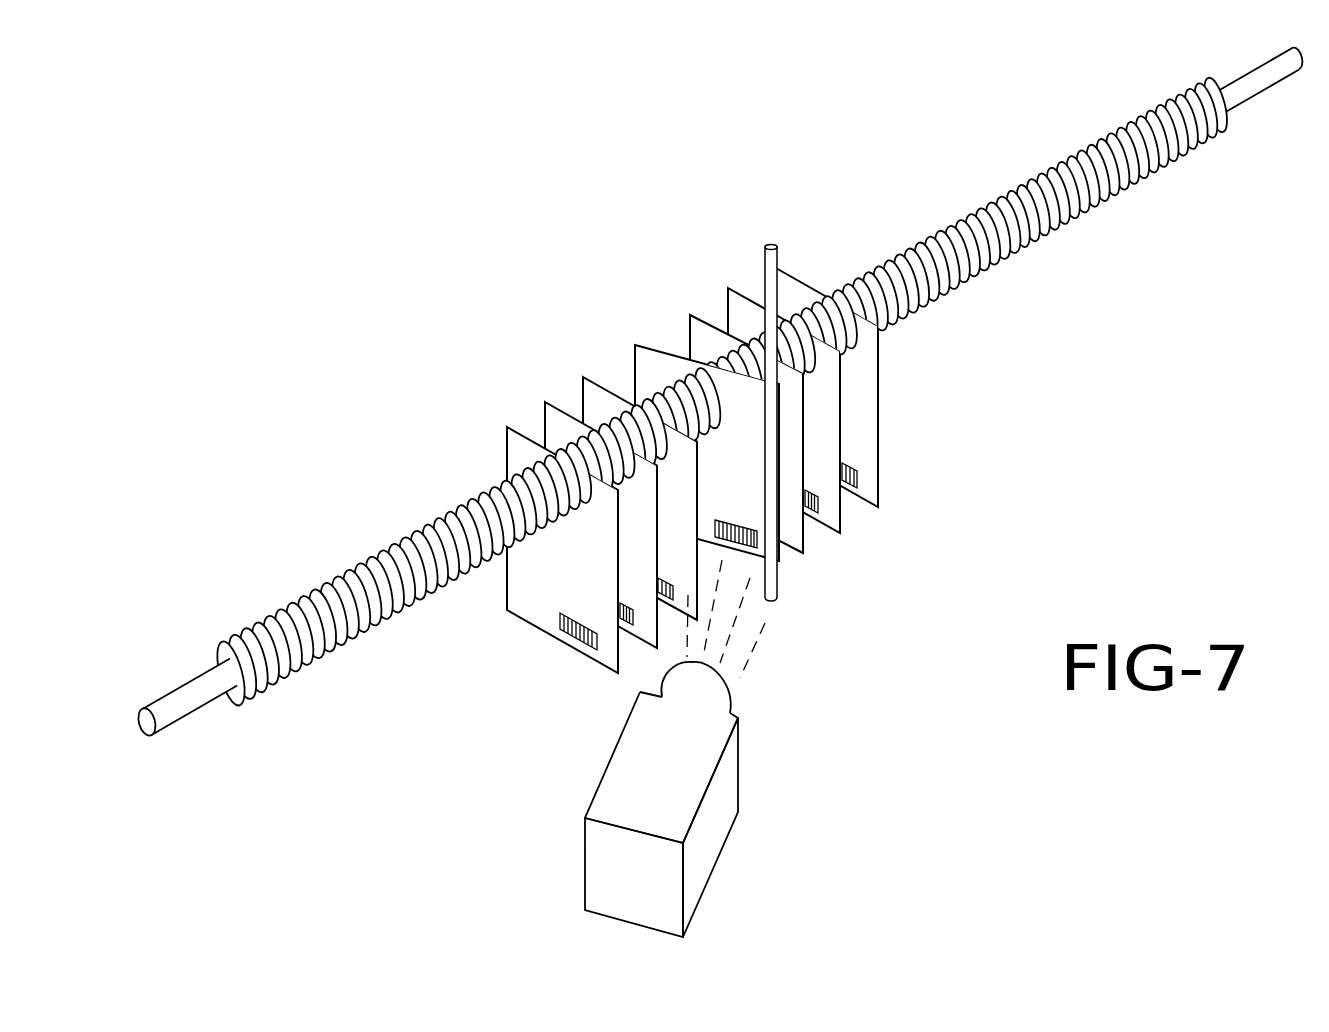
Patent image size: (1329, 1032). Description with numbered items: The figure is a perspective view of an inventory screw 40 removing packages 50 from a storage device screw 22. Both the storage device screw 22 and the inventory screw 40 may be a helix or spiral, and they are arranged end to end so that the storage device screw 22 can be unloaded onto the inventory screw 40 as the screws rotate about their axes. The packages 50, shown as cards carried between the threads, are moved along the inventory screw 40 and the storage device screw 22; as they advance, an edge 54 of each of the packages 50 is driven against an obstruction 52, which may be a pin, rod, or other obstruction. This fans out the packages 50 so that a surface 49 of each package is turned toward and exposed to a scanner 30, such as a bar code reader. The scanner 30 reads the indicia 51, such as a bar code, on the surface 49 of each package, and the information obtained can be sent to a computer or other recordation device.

The storage device screw 22 is at (720, 391).
The inventory screw 40 is at (348, 573).
The packages 50 is at (685, 461).
The surface 49 is at (556, 575).
The indicia 51 is at (580, 635).
The obstruction 52 is at (767, 282).
The edge 54 is at (783, 447).
The scanner 30 is at (712, 823).